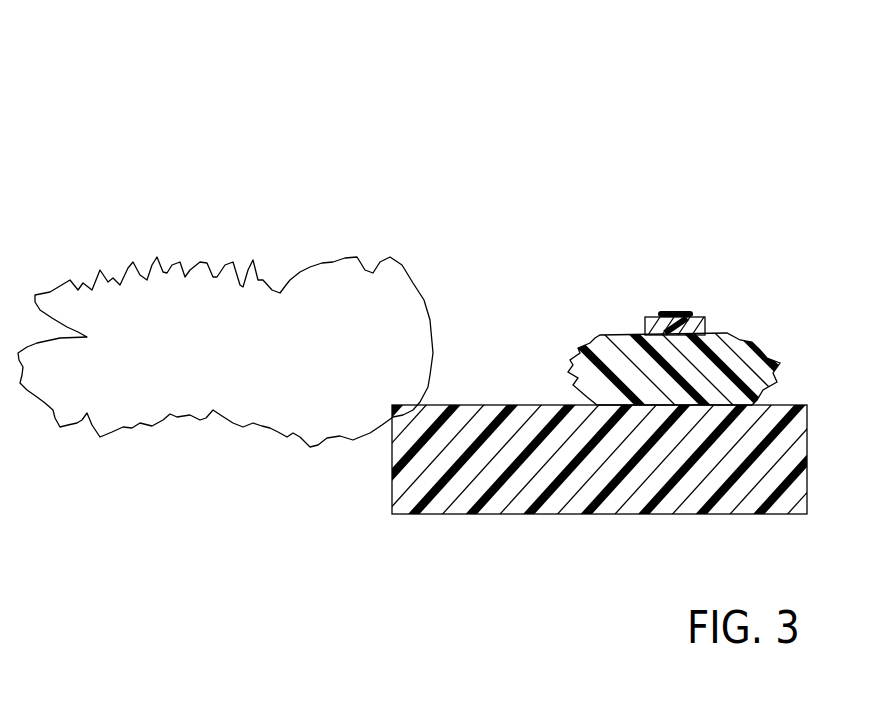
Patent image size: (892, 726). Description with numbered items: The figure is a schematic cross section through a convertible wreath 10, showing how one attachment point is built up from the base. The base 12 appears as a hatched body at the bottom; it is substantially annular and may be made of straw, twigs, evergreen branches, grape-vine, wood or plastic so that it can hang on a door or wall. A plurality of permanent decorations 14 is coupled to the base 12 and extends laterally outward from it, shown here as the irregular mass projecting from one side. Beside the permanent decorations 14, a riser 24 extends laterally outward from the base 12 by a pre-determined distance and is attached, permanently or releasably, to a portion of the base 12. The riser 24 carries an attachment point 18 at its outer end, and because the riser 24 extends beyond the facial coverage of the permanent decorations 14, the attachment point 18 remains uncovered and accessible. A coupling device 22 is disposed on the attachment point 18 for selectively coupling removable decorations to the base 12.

The convertible wreath 10 is at (100, 93).
The base 12 is at (452, 515).
The permanent decorations 14 is at (97, 271).
The attachment point 18 is at (643, 327).
The coupling device 22 is at (675, 311).
The riser 24 is at (772, 355).